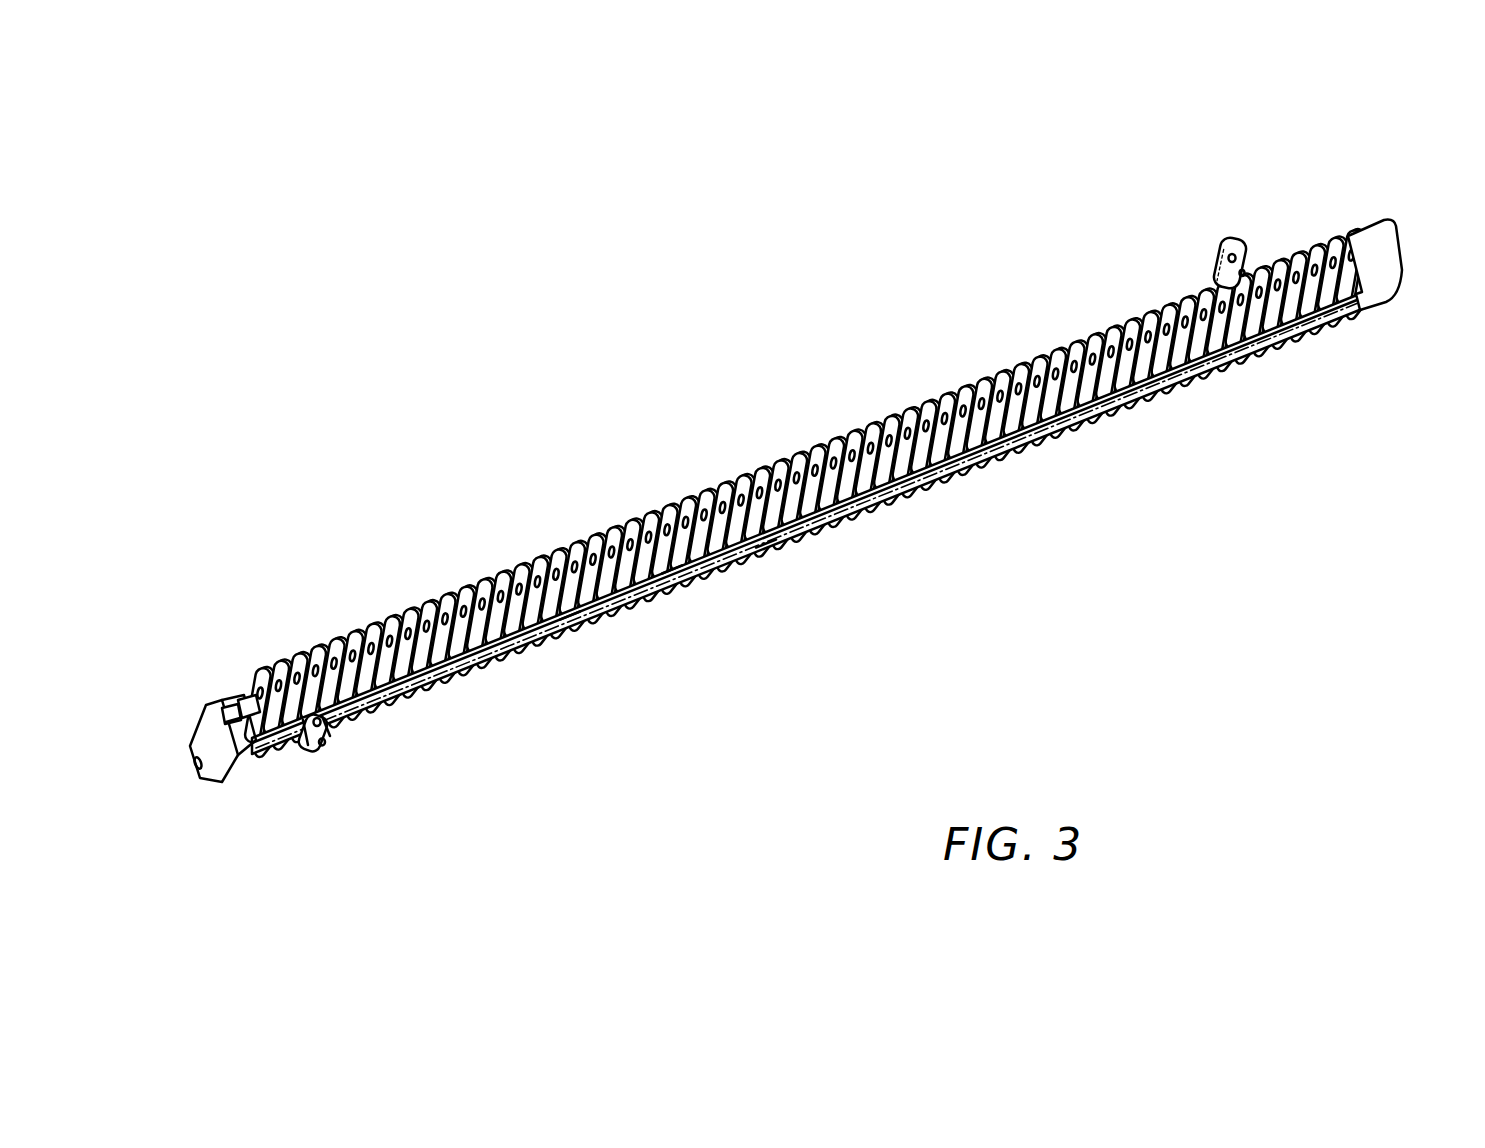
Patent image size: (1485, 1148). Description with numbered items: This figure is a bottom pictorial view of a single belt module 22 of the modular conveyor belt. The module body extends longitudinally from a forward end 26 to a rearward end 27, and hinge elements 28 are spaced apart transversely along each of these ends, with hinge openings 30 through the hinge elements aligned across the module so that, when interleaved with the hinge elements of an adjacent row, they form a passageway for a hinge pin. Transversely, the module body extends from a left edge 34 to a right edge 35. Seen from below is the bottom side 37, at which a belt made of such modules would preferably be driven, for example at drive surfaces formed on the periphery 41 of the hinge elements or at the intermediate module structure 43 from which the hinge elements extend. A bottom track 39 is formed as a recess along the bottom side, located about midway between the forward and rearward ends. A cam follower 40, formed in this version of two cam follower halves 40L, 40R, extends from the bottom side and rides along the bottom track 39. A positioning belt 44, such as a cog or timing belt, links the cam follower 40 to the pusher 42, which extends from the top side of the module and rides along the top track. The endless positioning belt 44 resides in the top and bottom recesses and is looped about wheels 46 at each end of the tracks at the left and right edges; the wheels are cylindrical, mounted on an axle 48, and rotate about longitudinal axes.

The belt module 22 is at (805, 485).
The forward end 26 is at (1182, 350).
The rearward end 27 is at (572, 547).
The hinge elements 28 is at (880, 512).
The hinge openings 30 is at (1025, 368).
The left edge 34 is at (206, 737).
The right edge 35 is at (1406, 241).
The bottom side 37 is at (1027, 452).
The bottom track 39 is at (568, 617).
The cam follower 40 is at (328, 745).
The cam follower half 40L is at (308, 745).
The cam follower half 40R is at (338, 727).
The periphery of the hinge elements 41 is at (766, 538).
The pusher 42 is at (1247, 252).
The intermediate module structure 43 is at (672, 553).
The positioning belt 44 is at (232, 702).
The wheels 46 is at (233, 706).
The axle 48 is at (243, 704).